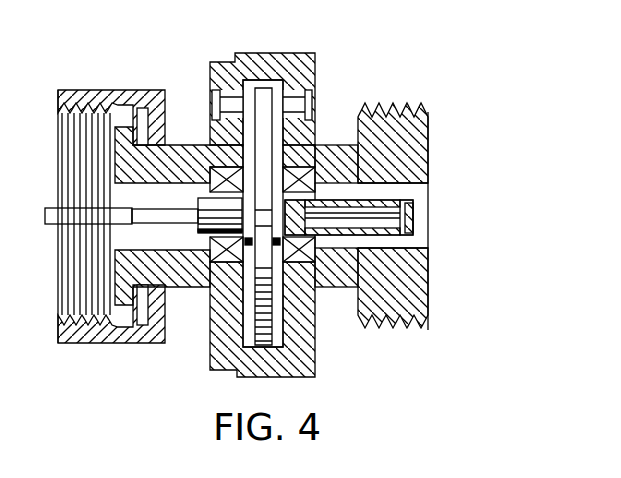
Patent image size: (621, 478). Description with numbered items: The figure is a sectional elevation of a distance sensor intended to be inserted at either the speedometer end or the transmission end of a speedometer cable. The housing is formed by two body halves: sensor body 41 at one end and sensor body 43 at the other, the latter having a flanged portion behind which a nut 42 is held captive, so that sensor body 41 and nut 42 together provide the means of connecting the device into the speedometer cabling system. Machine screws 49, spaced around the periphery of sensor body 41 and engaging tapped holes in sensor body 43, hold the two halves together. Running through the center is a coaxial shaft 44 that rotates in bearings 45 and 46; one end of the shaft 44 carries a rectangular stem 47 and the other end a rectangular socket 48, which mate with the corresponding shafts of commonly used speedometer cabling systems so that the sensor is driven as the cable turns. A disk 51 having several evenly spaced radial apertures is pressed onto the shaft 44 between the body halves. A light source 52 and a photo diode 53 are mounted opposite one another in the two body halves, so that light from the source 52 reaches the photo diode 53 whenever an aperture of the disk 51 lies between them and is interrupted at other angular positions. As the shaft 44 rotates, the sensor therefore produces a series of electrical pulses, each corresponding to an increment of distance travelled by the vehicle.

The sensor body 41 is at (428, 150).
The nut 42 is at (91, 345).
The sensor body 43 is at (168, 140).
The coaxial shaft 44 is at (150, 222).
The bearing 45 is at (226, 262).
The bearing 46 is at (302, 195).
The rectangular stem 47 is at (52, 208).
The rectangular socket 48 is at (414, 215).
The machine screws 49 is at (316, 84).
The disk 51 is at (268, 88).
The light source 52 is at (318, 148).
The photo diode 53 is at (210, 103).